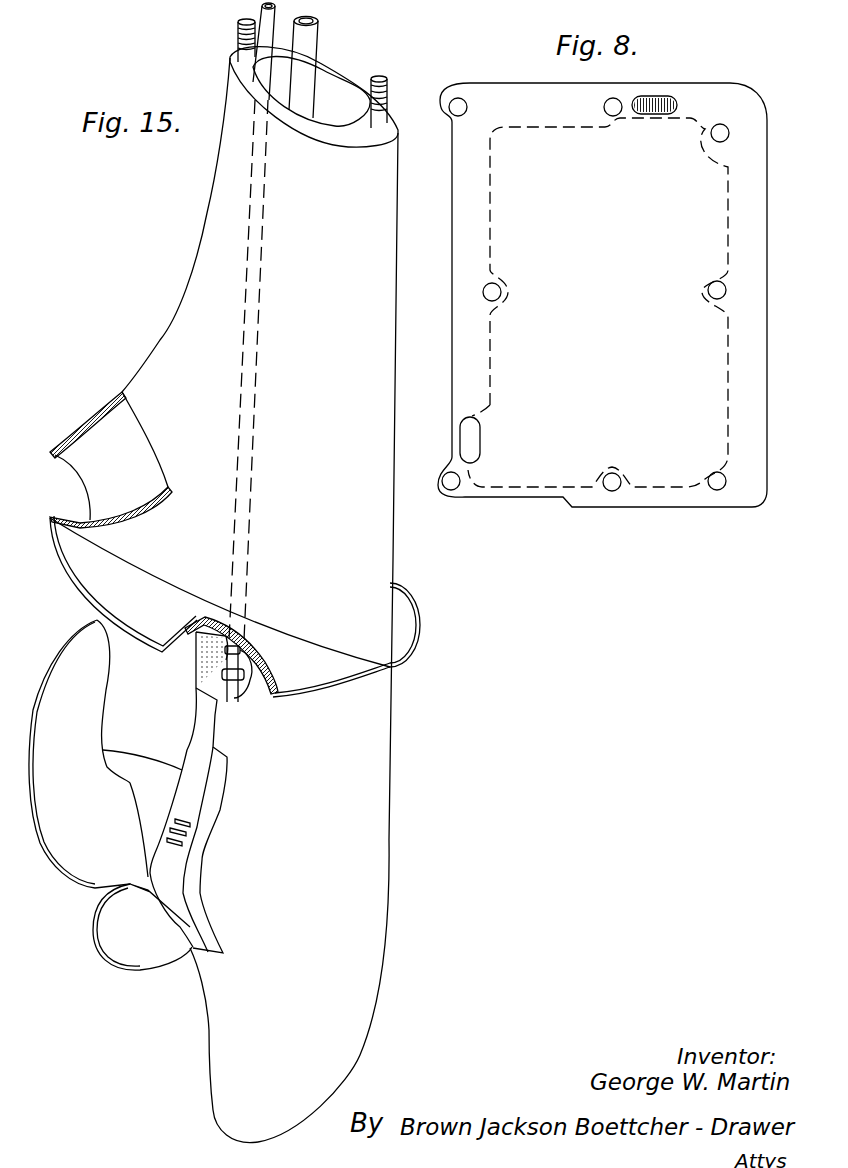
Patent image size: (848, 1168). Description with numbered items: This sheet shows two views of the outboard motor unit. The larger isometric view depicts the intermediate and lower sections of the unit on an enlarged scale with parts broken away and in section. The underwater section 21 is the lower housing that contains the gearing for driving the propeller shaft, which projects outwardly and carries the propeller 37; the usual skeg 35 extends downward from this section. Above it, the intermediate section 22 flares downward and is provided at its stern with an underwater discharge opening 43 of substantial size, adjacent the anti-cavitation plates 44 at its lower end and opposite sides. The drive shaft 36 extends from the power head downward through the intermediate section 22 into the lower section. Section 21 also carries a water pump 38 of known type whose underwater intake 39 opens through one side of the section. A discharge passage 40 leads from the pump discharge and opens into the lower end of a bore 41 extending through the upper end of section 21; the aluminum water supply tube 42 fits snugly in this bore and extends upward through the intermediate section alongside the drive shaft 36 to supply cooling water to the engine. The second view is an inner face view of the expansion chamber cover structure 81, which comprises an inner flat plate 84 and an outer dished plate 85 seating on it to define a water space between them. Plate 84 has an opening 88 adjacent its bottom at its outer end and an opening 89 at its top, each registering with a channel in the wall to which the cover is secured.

In FIG. 15, the underwater section 21 is at (372, 850).
In FIG. 15, the intermediate section 22 is at (388, 530).
In FIG. 15, the skeg 35 is at (232, 1094).
In FIG. 15, the drive shaft 36 is at (310, 40).
In FIG. 15, the propeller 37 is at (85, 705).
In FIG. 15, the water pump 38 is at (197, 780).
In FIG. 15, the underwater intake 39 is at (192, 825).
In FIG. 15, the discharge passage 40 is at (232, 700).
In FIG. 15, the bore 41 is at (245, 672).
In FIG. 15, the water supply tube 42 is at (261, 15).
In FIG. 15, the underwater discharge opening 43 is at (62, 471).
In FIG. 15, the anti-cavitation plates 44 is at (116, 603).
In FIG. 8, the cover structure 81 is at (741, 72).
In FIG. 8, the inner flat plate 84 is at (500, 200).
In FIG. 8, the outer plate 85 is at (667, 109).
In FIG. 8, the opening 88 is at (488, 447).
In FIG. 8, the opening 89 is at (656, 112).